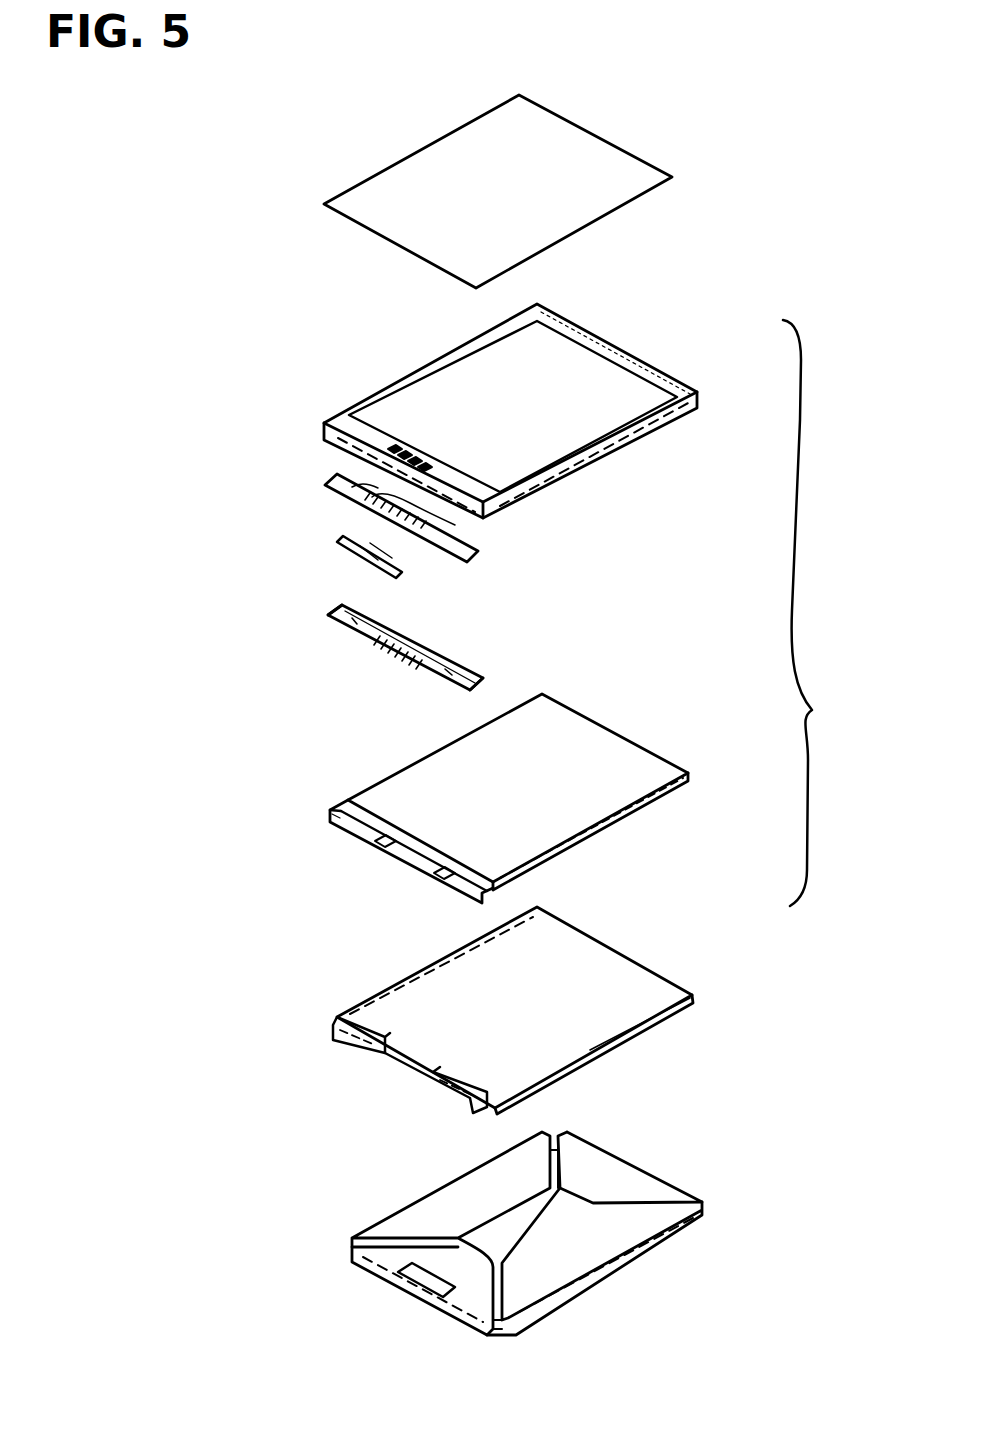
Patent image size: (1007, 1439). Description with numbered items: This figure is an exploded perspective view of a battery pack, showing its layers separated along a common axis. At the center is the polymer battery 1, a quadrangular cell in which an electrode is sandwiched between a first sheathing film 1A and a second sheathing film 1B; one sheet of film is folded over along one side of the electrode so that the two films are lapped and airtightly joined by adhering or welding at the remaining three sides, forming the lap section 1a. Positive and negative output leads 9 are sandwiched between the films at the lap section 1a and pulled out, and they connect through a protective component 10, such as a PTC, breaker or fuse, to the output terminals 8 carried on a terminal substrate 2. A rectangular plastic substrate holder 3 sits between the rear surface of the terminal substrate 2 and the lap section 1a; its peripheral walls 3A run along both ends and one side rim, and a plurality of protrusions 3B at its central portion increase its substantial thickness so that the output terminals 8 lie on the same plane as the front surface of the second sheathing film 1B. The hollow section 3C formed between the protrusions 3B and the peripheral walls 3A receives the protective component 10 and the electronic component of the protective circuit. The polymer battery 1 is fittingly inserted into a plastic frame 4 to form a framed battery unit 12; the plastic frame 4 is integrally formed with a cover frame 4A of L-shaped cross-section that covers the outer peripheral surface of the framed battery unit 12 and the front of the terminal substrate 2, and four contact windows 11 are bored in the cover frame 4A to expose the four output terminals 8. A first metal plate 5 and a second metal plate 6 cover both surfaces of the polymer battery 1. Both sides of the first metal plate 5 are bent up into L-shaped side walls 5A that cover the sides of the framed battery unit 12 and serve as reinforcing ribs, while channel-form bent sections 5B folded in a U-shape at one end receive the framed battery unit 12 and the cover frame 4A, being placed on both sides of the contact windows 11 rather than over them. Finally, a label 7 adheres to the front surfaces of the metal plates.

The polymer battery 1 is at (506, 814).
The first sheathing film 1A is at (597, 837).
The second sheathing film 1B is at (612, 788).
The lap section 1a is at (337, 808).
The terminal substrate 2 is at (414, 539).
The substrate holder 3 is at (392, 677).
The peripheral wall 3A is at (330, 607).
The protrusion 3B is at (387, 652).
The hollow section 3C is at (352, 627).
The plastic frame 4 is at (510, 394).
The cover frame 4A is at (377, 437).
The first metal plate 5 is at (507, 1010).
The side wall 5A is at (406, 975).
The channel-form bent section 5B is at (380, 1028).
The second metal plate 6 is at (607, 157).
The label 7 is at (612, 1175).
The output terminal 8 is at (368, 503).
The output lead 9 is at (387, 845).
The protective component 10 is at (372, 568).
The contact window 11 is at (412, 445).
The framed battery unit 12 is at (821, 613).